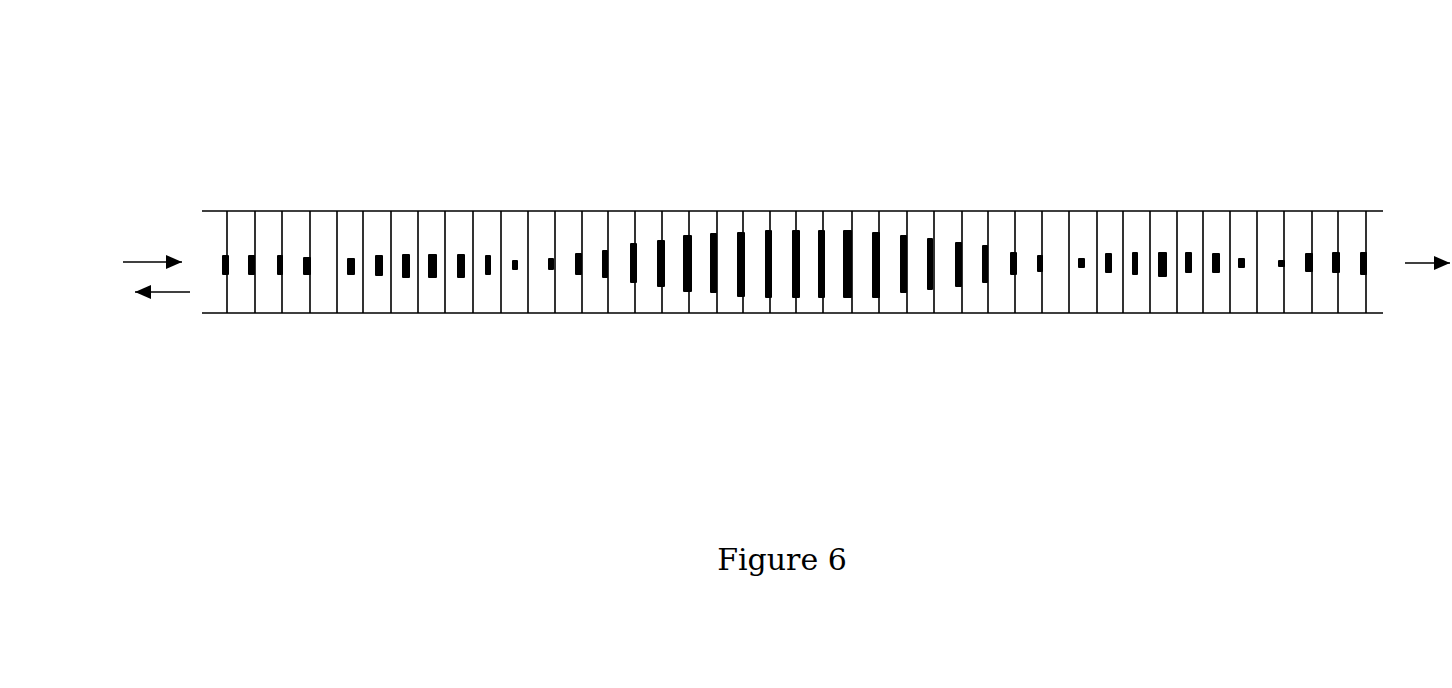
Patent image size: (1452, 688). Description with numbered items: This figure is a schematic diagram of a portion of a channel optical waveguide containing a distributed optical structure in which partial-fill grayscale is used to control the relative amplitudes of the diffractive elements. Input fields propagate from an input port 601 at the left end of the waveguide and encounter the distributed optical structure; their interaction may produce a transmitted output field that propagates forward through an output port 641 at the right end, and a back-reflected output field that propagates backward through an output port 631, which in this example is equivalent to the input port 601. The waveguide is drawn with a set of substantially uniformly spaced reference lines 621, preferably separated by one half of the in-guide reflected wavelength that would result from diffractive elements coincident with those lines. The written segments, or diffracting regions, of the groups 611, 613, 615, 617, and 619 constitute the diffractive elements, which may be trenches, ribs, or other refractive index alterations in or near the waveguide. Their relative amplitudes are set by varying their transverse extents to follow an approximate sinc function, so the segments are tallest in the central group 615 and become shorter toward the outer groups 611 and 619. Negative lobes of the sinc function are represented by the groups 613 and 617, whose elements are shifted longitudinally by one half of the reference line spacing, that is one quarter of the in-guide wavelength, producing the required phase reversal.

The input port 601 is at (143, 260).
The group of written segments 611 is at (297, 295).
The group of written segments 613 is at (512, 290).
The group of written segments 615 is at (1030, 287).
The group of written segments 617 is at (1237, 288).
The group of written segments 619 is at (1293, 293).
The reference lines 621 is at (662, 210).
The output port 631 is at (172, 292).
The output port 641 is at (1420, 263).